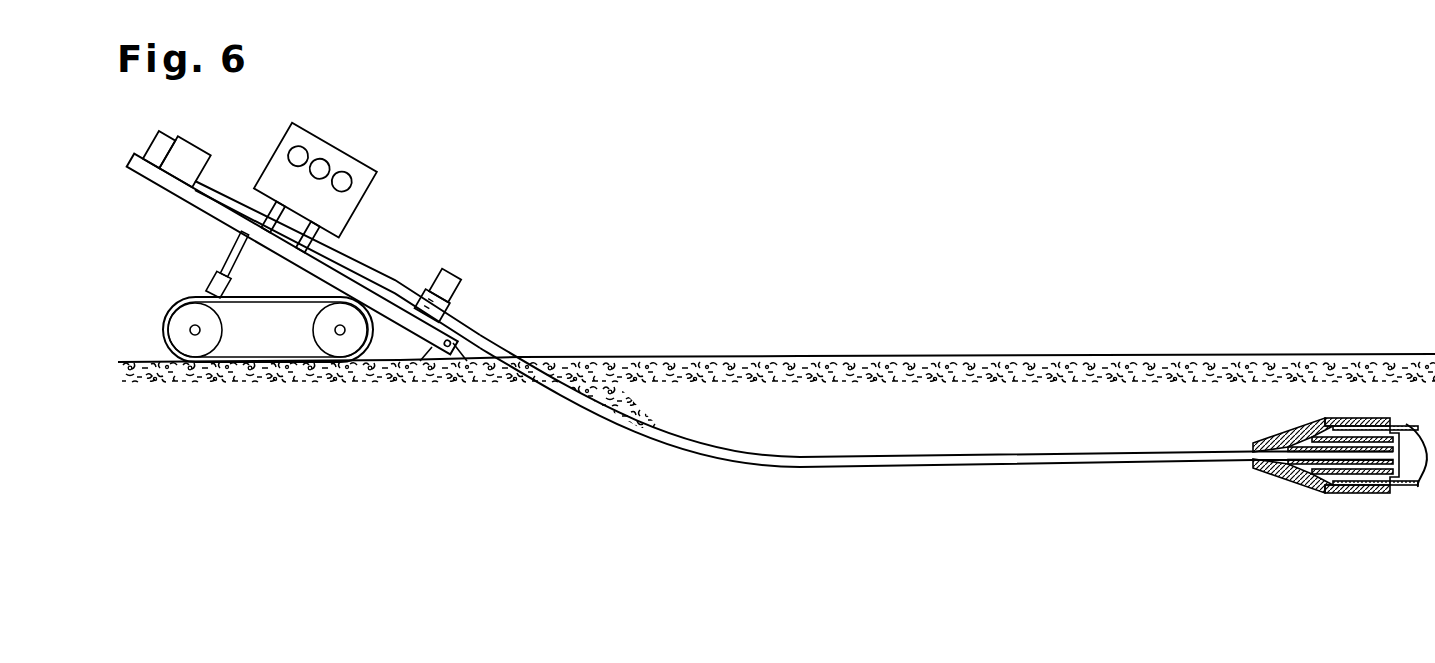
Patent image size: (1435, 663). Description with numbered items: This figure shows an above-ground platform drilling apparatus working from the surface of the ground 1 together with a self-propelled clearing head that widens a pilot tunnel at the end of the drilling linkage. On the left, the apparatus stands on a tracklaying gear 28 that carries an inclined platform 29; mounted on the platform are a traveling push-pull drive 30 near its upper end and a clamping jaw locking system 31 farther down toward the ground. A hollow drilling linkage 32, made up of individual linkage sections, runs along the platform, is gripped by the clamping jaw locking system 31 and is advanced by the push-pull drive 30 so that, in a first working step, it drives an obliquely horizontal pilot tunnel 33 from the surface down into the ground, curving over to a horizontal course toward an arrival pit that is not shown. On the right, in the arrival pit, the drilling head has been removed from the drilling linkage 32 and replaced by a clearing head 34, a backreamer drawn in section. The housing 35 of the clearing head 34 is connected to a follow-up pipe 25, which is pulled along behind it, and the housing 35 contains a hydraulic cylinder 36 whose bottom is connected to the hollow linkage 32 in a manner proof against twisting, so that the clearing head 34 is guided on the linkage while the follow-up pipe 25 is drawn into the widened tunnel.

The ground 1 is at (348, 372).
The follow-up pipe 25 is at (1406, 425).
The tracklaying gear 28 is at (266, 344).
The platform 29 is at (203, 208).
The traveling push-pull drive 30 is at (190, 156).
The clamping jaw locking system 31 is at (456, 277).
The hollow drilling linkage 32 is at (951, 465).
The pilot tunnel 33 is at (726, 471).
The clearing head 34 is at (1286, 480).
The housing 35 is at (1378, 487).
The hydraulic cylinder 36 is at (1360, 474).